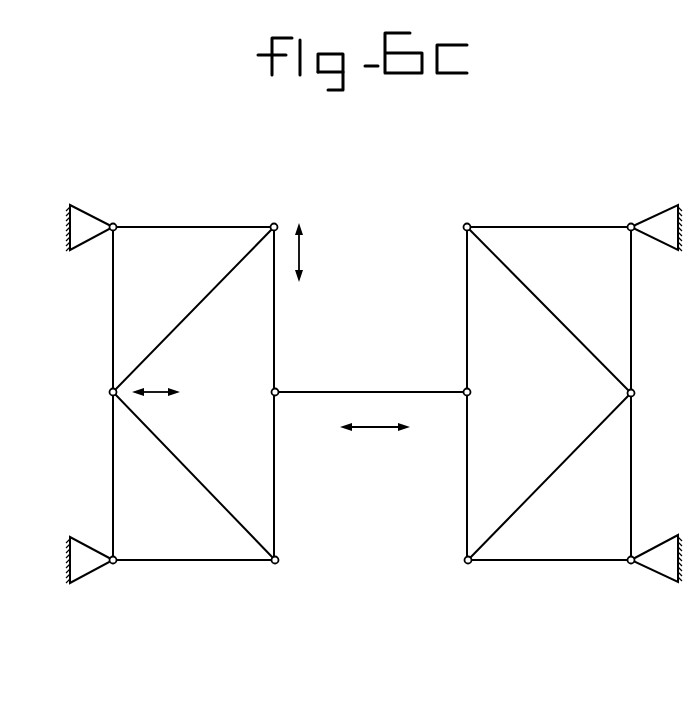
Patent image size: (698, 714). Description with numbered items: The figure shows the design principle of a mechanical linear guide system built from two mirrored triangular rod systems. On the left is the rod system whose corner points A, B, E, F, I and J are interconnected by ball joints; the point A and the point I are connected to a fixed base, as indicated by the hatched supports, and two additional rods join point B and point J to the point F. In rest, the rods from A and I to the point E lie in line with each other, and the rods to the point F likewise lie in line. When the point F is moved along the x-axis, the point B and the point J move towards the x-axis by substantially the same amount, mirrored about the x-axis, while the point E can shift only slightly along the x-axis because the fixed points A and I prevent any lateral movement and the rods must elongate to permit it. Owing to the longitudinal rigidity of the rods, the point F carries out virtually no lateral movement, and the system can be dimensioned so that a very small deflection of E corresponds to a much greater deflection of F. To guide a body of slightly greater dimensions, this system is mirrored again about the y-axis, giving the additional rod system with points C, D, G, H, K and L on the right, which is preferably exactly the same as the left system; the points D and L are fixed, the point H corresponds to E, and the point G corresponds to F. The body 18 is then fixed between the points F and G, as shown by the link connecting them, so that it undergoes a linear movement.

The body 18 is at (318, 392).
The point A is at (124, 215).
The point B is at (262, 215).
The point C is at (456, 215).
The point D is at (619, 215).
The point E is at (101, 381).
The point F is at (264, 381).
The point G is at (482, 382).
The point H is at (646, 382).
The point I is at (114, 581).
The point J is at (273, 580).
The point K is at (468, 581).
The point L is at (630, 581).